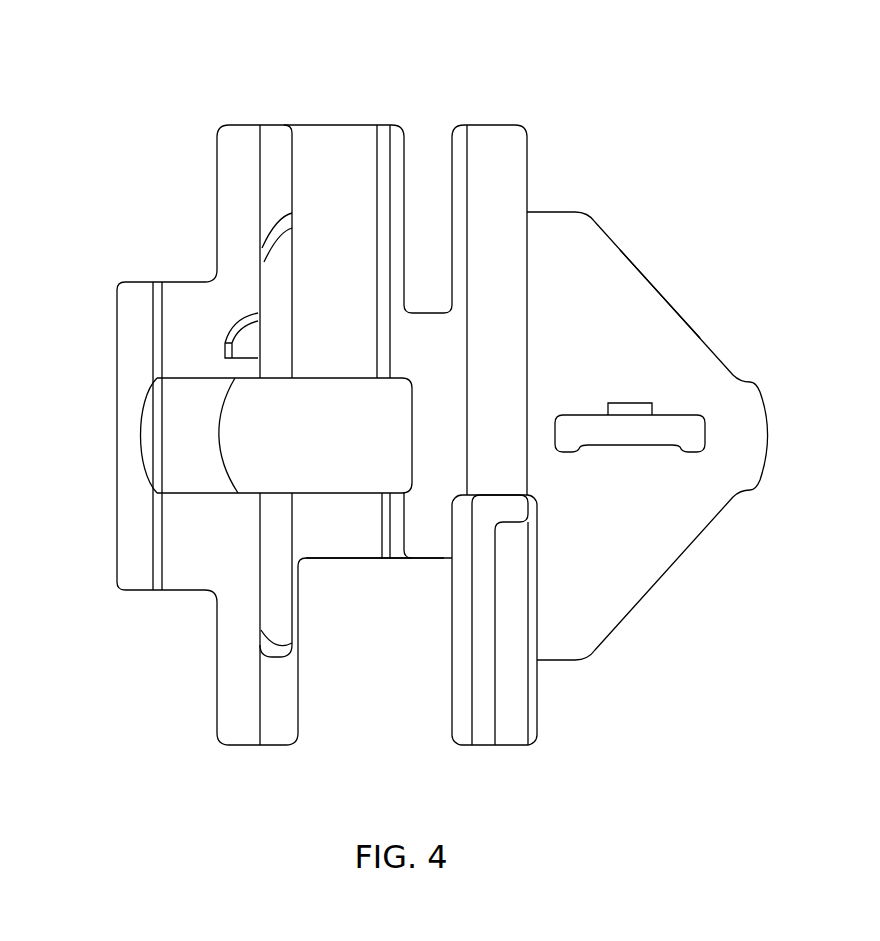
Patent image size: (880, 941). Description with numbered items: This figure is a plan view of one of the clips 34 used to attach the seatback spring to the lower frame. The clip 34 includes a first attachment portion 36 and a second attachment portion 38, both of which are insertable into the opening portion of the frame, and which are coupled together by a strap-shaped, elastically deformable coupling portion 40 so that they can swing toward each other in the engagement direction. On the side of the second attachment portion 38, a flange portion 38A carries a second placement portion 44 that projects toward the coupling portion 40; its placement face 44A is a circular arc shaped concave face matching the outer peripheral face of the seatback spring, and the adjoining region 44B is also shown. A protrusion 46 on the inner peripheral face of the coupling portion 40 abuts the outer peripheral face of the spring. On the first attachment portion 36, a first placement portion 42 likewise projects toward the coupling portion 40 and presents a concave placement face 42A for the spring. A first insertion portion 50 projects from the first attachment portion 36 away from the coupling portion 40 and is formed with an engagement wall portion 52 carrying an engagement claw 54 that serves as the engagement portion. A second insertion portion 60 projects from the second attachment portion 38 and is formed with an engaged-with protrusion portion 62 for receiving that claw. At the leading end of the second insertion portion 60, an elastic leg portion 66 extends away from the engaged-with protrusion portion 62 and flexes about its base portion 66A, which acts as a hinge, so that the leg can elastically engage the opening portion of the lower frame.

The clip 34 is at (567, 144).
The first attachment portion 36 is at (632, 212).
The second attachment portion 38 is at (134, 218).
The flange portion 38A is at (136, 295).
The coupling portion 40 is at (356, 566).
The first placement portion 42 is at (548, 711).
The placement face 42A is at (460, 686).
The second placement portion 44 is at (204, 153).
The placement face 44A is at (328, 168).
The second arm strip 44B is at (382, 138).
The protrusion 46 is at (397, 548).
The first insertion portion 50 is at (662, 280).
The engagement wall portion 52 is at (683, 400).
The engagement claw 54 is at (628, 402).
The second insertion portion 60 is at (254, 585).
The engaged-with protrusion portion 62 is at (428, 428).
The elastic leg portion 66 is at (245, 497).
The base portion 66A is at (228, 427).